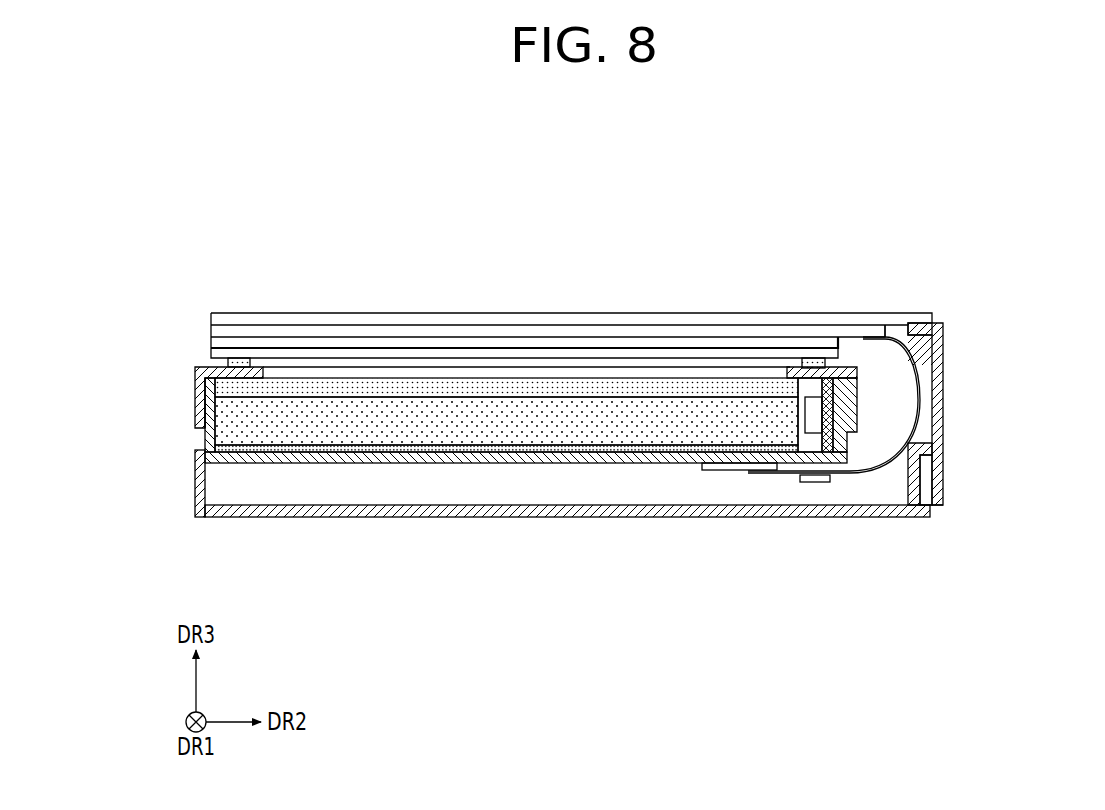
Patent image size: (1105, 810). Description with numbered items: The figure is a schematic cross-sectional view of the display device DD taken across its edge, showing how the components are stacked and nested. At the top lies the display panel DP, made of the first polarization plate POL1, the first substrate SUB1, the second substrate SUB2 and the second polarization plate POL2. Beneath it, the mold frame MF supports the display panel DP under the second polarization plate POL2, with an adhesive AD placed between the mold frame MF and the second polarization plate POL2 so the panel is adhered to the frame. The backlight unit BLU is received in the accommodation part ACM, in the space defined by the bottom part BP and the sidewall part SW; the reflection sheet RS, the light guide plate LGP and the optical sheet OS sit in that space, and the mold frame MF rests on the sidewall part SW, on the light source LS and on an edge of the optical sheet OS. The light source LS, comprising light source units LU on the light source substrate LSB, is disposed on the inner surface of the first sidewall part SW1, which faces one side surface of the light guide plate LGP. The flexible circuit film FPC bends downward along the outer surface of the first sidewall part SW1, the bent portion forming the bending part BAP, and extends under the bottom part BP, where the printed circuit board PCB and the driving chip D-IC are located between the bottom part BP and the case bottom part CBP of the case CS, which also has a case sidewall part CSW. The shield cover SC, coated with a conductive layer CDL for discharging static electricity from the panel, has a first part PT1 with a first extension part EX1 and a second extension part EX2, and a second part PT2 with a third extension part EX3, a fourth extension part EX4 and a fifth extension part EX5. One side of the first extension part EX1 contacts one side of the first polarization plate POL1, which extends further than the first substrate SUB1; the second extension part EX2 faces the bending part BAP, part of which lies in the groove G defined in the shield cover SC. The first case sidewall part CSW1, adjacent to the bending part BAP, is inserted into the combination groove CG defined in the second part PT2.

The display device DD is at (895, 192).
The display panel DP is at (86, 288).
The first polarization plate POL1 is at (210, 318).
The first substrate SUB1 is at (210, 331).
The second substrate SUB2 is at (210, 343).
The second polarization plate POL2 is at (210, 353).
The adhesive AD is at (238, 358).
The mold frame MF is at (195, 403).
The accommodation part ACM is at (203, 436).
The sidewall part SW is at (212, 428).
The first sidewall part SW1 is at (840, 425).
The bottom part BP is at (316, 458).
The backlight unit BLU is at (843, 207).
The optical sheet OS is at (553, 385).
The light guide plate LGP is at (632, 403).
The reflection sheet RS is at (697, 449).
The light source LS is at (880, 250).
The light source unit LU is at (800, 412).
The light source substrate LSB is at (828, 385).
The case CS is at (193, 481).
The case sidewall part CSW is at (202, 492).
The case bottom part CBP is at (368, 510).
The printed circuit board PCB is at (724, 470).
The flexible circuit film FPC is at (922, 365).
The driving chip D-IC is at (812, 479).
The groove G is at (906, 320).
The shield cover SC is at (946, 417).
The conductive layer CDL is at (946, 376).
The bending part BAP is at (930, 395).
The first case sidewall part CSW1 is at (943, 492).
The first part PT1 is at (1040, 293).
The first extension part EX1 is at (937, 312).
The second extension part EX2 is at (943, 350).
The second part PT2 is at (1040, 440).
The third extension part EX3 is at (943, 437).
The fourth extension part EX4 is at (943, 458).
The fifth extension part EX5 is at (925, 482).
The combination groove CG is at (918, 480).